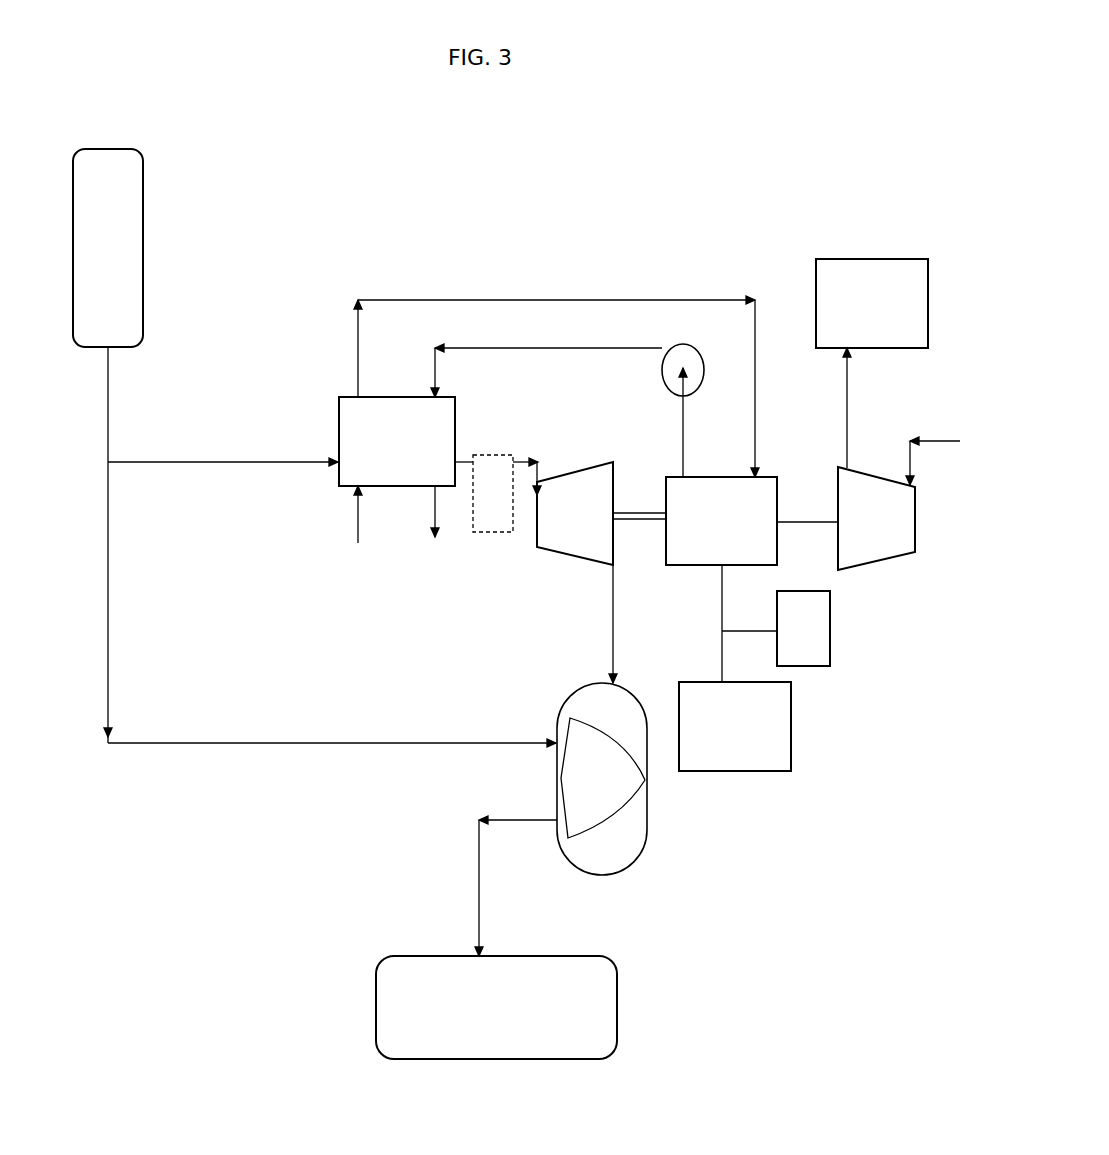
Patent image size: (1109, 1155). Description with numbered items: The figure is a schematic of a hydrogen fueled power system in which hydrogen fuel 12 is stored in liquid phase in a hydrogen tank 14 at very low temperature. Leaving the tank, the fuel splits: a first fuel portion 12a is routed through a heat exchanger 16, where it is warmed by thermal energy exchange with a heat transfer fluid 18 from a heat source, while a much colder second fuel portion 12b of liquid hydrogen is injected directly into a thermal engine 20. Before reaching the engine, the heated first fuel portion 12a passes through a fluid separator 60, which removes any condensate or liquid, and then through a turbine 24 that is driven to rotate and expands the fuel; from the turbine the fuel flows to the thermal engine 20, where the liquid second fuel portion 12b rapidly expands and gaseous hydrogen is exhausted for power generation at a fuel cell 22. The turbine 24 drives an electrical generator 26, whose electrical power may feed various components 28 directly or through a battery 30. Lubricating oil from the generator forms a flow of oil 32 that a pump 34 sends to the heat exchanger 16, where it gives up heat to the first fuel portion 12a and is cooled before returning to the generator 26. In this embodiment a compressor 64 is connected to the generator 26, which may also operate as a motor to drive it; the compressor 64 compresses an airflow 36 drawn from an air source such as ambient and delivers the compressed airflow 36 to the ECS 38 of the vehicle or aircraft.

The hydrogen fuel 12 is at (95, 281).
The hydrogen tank 14 is at (85, 147).
The first fuel portion 12a is at (245, 463).
The second fuel portion 12b is at (267, 746).
The heat exchanger 16 is at (379, 460).
The heat transfer fluid 18 is at (433, 507).
The thermal engine 20 is at (645, 848).
The fuel cell 22 is at (483, 1024).
The turbine 24 is at (564, 525).
The electrical generator 26 is at (707, 534).
The components 28 is at (722, 733).
The battery 30 is at (792, 638).
The flow of oil 32 is at (577, 347).
The pump 34 is at (665, 386).
The airflow 36 is at (932, 445).
The ECS 38 is at (859, 313).
The fluid separator 60 is at (488, 532).
The compressor 64 is at (862, 529).